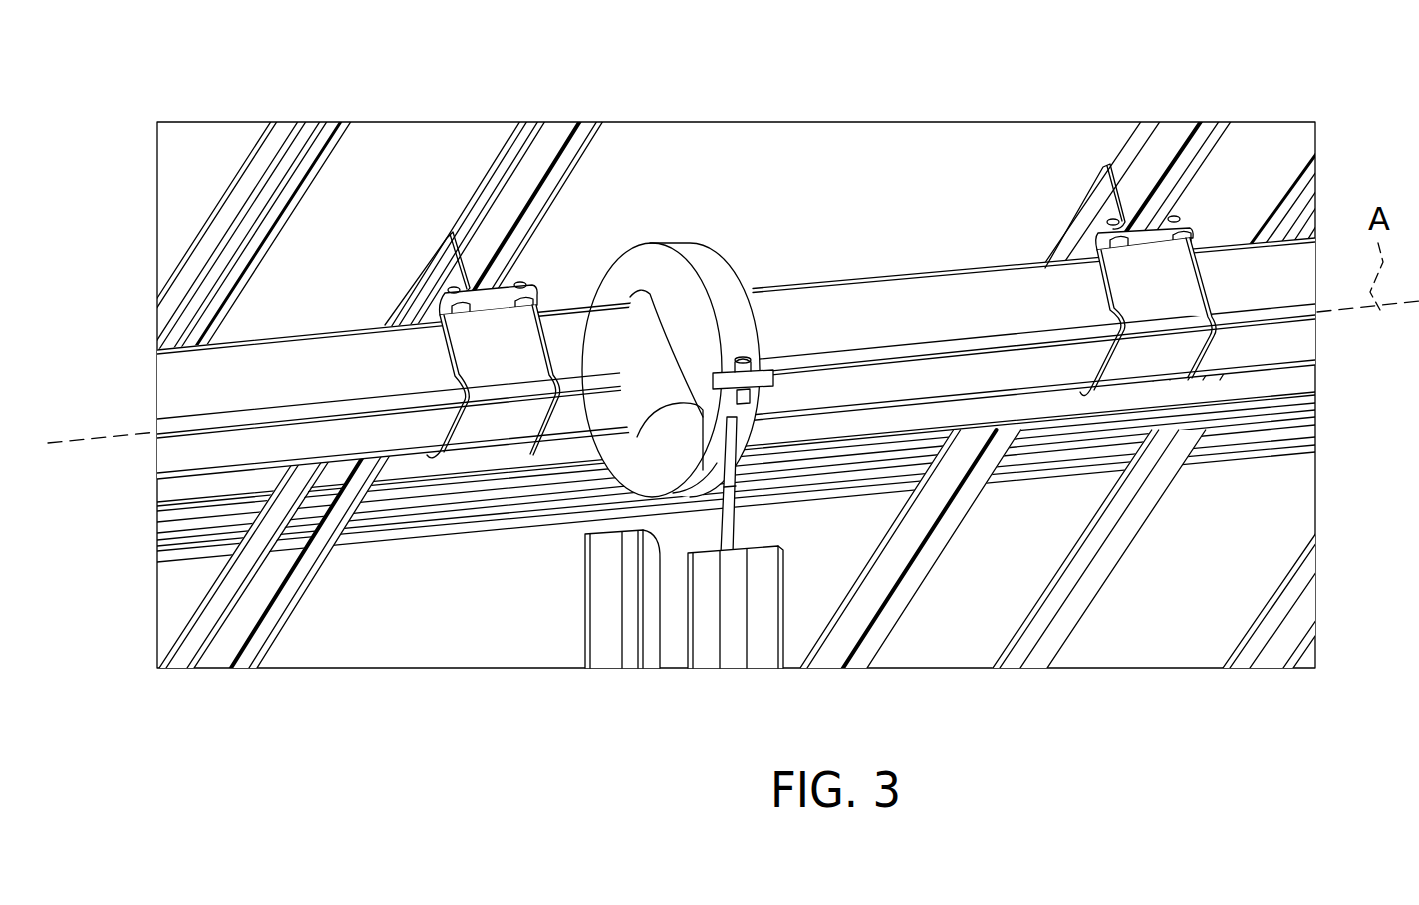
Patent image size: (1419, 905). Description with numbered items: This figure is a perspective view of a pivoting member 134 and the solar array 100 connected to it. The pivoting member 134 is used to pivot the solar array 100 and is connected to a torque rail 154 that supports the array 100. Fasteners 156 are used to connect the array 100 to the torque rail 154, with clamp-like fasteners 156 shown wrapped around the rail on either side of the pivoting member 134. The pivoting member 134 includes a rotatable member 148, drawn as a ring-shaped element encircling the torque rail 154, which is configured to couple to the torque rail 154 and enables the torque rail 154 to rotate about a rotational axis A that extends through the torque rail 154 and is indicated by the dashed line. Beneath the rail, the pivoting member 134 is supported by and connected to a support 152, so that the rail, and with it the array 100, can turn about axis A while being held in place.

The solar array 100 is at (395, 173).
The pivoting member 134 is at (637, 205).
The rotatable member 148 is at (740, 252).
The support 152 is at (738, 627).
The torque rail 154 is at (595, 355).
The fasteners 156 is at (488, 347).